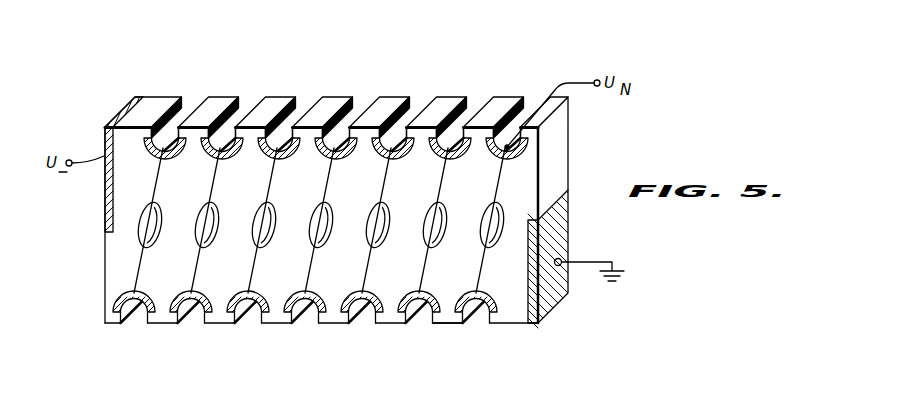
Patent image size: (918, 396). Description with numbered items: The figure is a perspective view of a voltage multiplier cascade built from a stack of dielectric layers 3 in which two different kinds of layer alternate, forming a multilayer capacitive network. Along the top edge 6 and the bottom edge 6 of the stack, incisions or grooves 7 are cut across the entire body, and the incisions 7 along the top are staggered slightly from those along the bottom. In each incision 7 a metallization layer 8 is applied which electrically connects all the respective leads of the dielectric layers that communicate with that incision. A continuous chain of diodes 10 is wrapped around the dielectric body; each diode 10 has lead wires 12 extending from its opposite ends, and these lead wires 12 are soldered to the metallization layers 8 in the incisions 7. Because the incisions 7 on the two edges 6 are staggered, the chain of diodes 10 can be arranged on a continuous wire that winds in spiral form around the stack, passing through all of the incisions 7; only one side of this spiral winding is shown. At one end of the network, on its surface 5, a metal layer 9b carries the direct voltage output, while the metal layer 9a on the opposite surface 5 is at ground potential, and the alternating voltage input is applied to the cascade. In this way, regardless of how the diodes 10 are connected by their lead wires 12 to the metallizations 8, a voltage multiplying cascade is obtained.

The dielectric layer 3 is at (216, 107).
The surface 5 is at (104, 271).
The edge 6 is at (158, 107).
The incision 7 is at (250, 108).
The metallization layer 8 is at (151, 169).
The metal layer 9a is at (567, 230).
The metal layer 9b is at (104, 203).
The diode 10 is at (253, 238).
The lead wire 12 is at (271, 187).